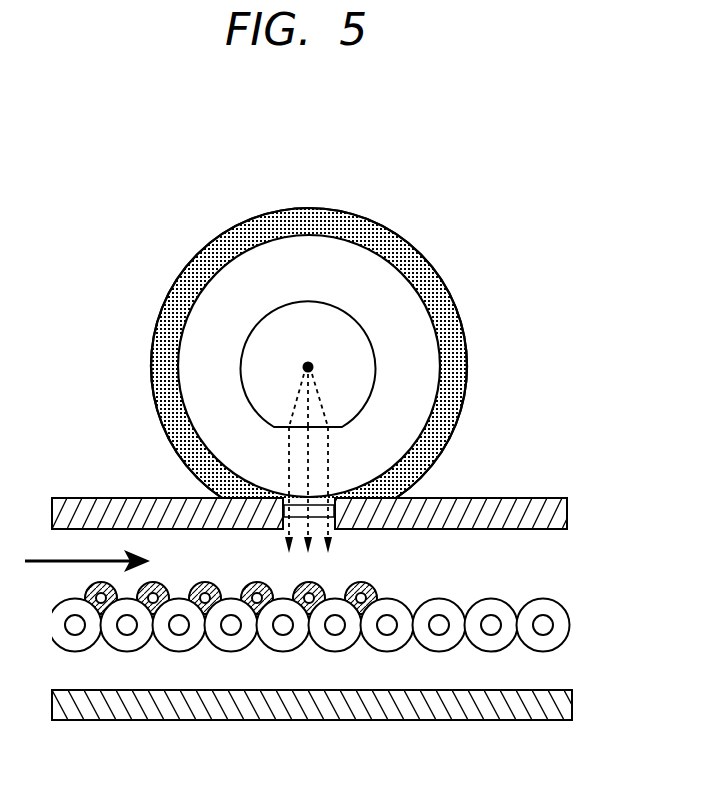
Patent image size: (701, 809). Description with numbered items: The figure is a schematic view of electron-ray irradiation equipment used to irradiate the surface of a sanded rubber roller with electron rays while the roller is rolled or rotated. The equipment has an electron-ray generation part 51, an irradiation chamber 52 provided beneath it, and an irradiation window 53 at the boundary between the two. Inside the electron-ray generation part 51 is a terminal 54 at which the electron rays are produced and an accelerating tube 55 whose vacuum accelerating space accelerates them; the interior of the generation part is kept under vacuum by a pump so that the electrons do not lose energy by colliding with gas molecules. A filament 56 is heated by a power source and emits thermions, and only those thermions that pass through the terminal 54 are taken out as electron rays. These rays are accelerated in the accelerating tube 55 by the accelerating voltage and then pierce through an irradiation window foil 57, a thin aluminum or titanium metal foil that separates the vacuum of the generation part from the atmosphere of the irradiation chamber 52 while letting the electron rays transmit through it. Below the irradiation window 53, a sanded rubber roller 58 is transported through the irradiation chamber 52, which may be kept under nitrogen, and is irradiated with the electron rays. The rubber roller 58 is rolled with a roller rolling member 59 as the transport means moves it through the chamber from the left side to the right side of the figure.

The electron-ray generation part 51 is at (369, 270).
The irradiation chamber 52 is at (457, 663).
The irradiation window 53 is at (335, 517).
The terminal 54 is at (373, 385).
The accelerating tube 55 is at (195, 258).
The filament 56 is at (312, 364).
The irradiation window foil 57 is at (285, 498).
The rubber roller 58 is at (262, 600).
The roller rolling member 59 is at (178, 628).